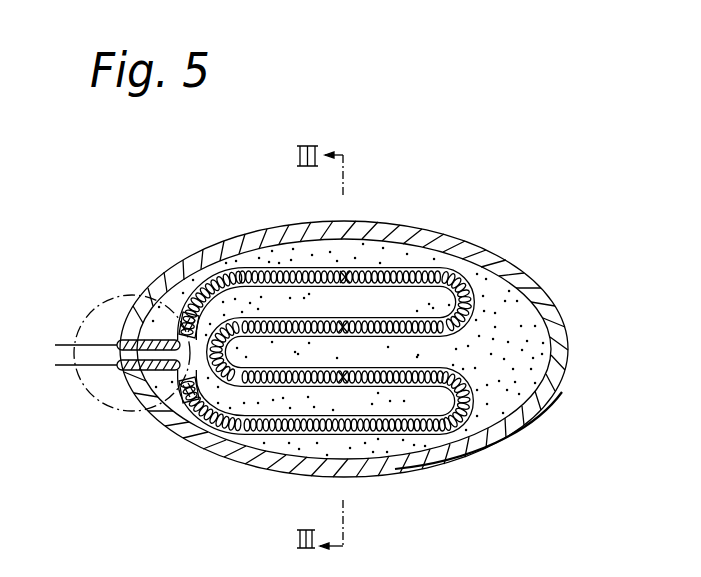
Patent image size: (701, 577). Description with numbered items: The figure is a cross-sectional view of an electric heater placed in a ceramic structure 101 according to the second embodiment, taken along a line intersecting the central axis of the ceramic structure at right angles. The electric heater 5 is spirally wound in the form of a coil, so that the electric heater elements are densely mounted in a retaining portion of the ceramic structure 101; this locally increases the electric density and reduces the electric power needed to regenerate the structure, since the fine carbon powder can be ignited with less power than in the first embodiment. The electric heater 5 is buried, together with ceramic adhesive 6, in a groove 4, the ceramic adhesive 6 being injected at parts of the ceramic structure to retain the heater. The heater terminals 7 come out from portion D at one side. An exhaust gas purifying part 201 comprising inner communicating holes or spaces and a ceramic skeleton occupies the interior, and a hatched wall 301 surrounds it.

The ceramic structure 101 is at (512, 262).
The hatched shell wall 301 is at (463, 247).
The exhaust gas purifying part 201 is at (518, 318).
The electric heater 5 is at (250, 262).
The groove 4 is at (283, 272).
The ceramic adhesive 6 is at (350, 280).
The heater terminals 7 is at (63, 343).
The portion D is at (95, 298).